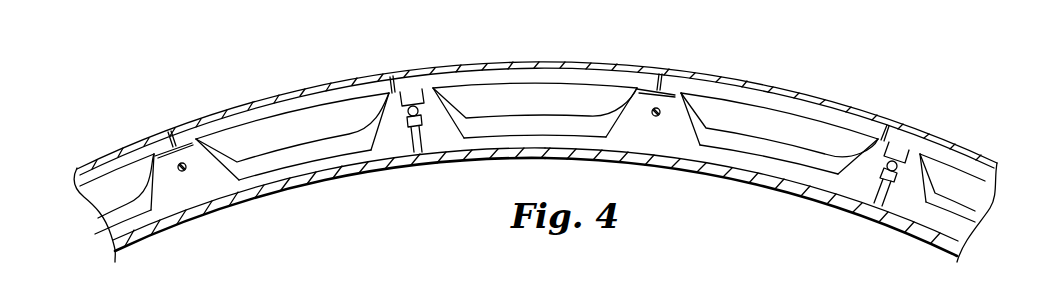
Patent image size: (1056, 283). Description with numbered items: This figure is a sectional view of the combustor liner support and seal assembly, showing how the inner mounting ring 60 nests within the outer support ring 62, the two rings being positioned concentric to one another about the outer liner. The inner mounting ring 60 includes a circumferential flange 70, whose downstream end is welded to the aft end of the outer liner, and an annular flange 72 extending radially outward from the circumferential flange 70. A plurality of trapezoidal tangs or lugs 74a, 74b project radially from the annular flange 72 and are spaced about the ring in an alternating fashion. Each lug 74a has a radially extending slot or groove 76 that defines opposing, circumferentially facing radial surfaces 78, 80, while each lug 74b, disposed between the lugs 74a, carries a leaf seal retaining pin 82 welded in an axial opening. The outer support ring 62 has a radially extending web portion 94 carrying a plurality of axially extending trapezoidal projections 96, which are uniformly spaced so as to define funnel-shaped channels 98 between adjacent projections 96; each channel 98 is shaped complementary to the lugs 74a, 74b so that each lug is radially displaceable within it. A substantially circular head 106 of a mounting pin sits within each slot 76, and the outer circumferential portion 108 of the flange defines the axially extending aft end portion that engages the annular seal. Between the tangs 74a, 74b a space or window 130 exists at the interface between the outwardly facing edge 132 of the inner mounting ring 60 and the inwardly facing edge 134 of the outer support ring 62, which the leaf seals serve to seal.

The inner mounting ring 60 is at (108, 238).
The outer support ring 62 is at (97, 218).
The circumferential flange 70 is at (327, 178).
The annular flange 72 is at (367, 171).
The tangs or lugs 74a is at (396, 150).
The tangs or lugs 74b is at (203, 182).
The slot or groove 76 is at (412, 100).
The radial surface 78 is at (412, 132).
The radial surface 80 is at (424, 126).
The leaf seal retaining pin 82 is at (182, 172).
The web portion 94 is at (987, 188).
The projections 96 is at (103, 172).
The funnel-shaped channels 98 is at (175, 151).
The head 106 is at (418, 105).
The outer circumferential portion 108 is at (737, 75).
The space or window 130 is at (284, 190).
The outwardly facing edge 132 is at (791, 179).
The inwardly facing edge 134 is at (748, 167).